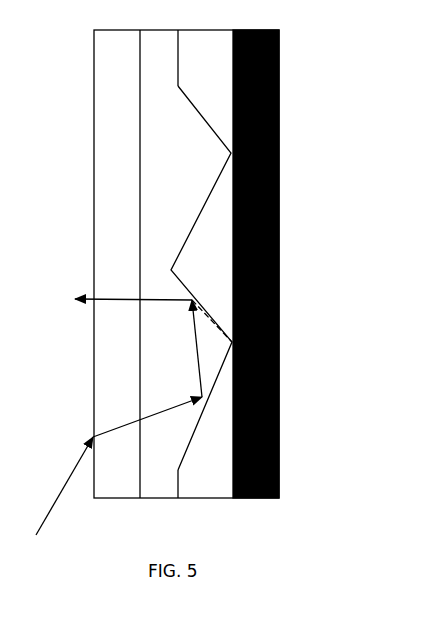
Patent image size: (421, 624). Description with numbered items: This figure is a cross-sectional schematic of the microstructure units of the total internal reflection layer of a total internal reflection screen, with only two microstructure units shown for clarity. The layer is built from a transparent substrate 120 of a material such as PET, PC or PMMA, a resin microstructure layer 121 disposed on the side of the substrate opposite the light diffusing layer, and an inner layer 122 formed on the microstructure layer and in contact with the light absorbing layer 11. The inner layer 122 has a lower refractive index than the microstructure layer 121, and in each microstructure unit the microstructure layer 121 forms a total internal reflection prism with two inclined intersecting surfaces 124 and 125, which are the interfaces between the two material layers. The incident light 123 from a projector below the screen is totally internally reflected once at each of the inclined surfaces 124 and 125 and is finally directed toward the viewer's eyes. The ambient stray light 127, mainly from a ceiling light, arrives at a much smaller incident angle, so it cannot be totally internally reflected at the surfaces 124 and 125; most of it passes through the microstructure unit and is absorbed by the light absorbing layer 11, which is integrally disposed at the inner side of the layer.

The light absorbing layer 11 is at (280, 280).
The transparent substrate 120 is at (121, 264).
The microstructure layer 121 is at (165, 264).
The inner layer 122 is at (201, 255).
The incident light 123 is at (105, 466).
The inclined intersecting surface 124 is at (210, 365).
The inclined intersecting surface 125 is at (153, 311).
The ambient stray light 127 is at (229, 172).